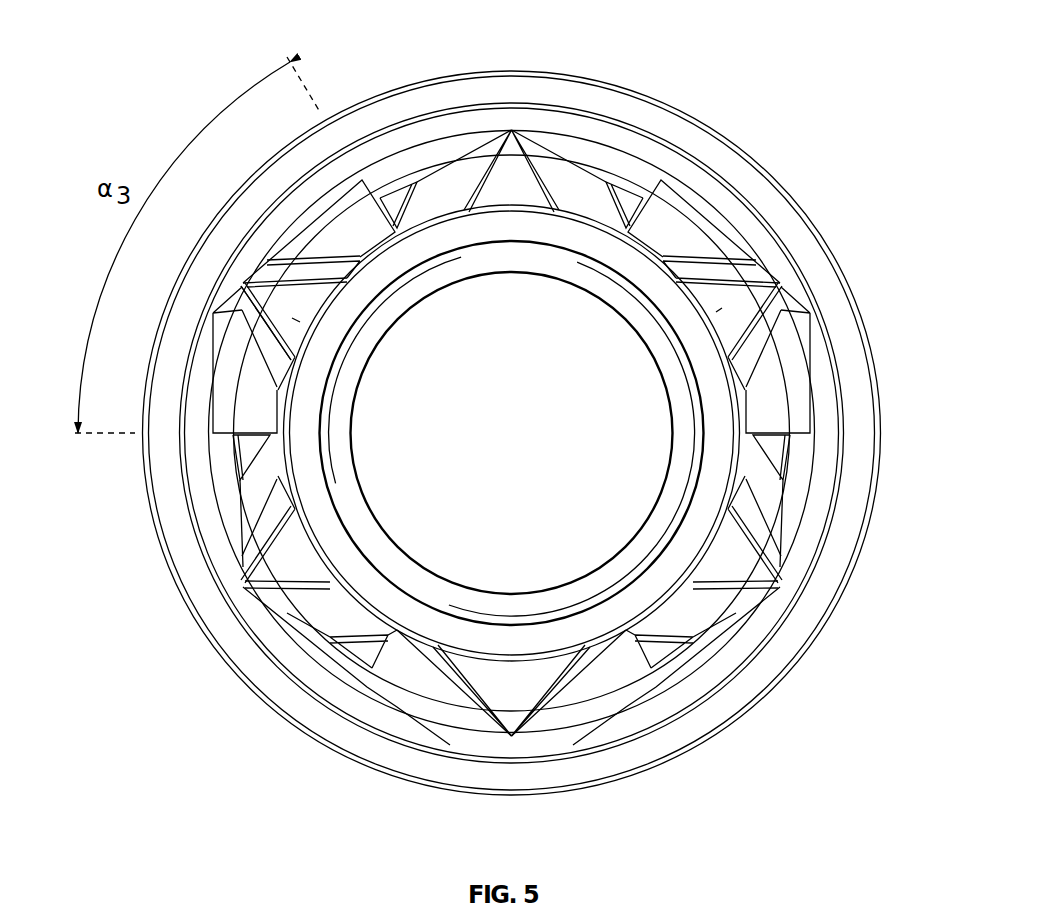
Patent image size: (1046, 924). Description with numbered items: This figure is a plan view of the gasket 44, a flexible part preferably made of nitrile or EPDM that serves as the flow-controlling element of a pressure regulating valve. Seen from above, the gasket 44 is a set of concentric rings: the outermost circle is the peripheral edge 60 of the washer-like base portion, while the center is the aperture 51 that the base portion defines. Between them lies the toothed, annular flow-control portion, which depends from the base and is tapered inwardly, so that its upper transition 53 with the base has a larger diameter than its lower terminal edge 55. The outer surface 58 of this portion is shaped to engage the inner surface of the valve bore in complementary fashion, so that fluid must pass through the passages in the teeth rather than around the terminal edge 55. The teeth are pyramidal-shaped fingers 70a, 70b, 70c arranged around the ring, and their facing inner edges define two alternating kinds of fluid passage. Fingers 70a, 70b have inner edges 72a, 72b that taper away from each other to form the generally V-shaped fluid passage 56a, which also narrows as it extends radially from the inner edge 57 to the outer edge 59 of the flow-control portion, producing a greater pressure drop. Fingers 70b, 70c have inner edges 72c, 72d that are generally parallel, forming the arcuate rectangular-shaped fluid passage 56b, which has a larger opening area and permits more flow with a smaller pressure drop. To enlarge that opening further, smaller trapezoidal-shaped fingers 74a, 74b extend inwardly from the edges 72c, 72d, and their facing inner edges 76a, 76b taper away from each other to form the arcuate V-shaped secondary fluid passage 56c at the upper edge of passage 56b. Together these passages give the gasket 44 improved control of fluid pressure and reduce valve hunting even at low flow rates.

The gasket 44 is at (752, 138).
The aperture 51 is at (522, 448).
The upper transition 53 is at (628, 683).
The terminal edge 55 is at (628, 190).
The fluid passage 56a is at (514, 128).
The fluid passage 56b is at (243, 281).
The secondary fluid passage 56c is at (292, 318).
The inner edge 57 is at (658, 607).
The outer surface 58 is at (400, 712).
The outer edge 59 is at (511, 737).
The peripheral edge 60 is at (880, 442).
The pyramidal-shaped finger 70a is at (375, 680).
The pyramidal-shaped finger 70b is at (247, 535).
The pyramidal-shaped finger 70c is at (441, 153).
The inner edge 72a is at (330, 660).
The inner edge 72b is at (238, 550).
The inner edge 72c is at (235, 458).
The inner edge 72d is at (382, 196).
The trapezoidal-shaped finger 74a is at (235, 387).
The trapezoidal-shaped finger 74b is at (338, 233).
The inner edge 76a is at (247, 290).
The inner edge 76b is at (265, 258).